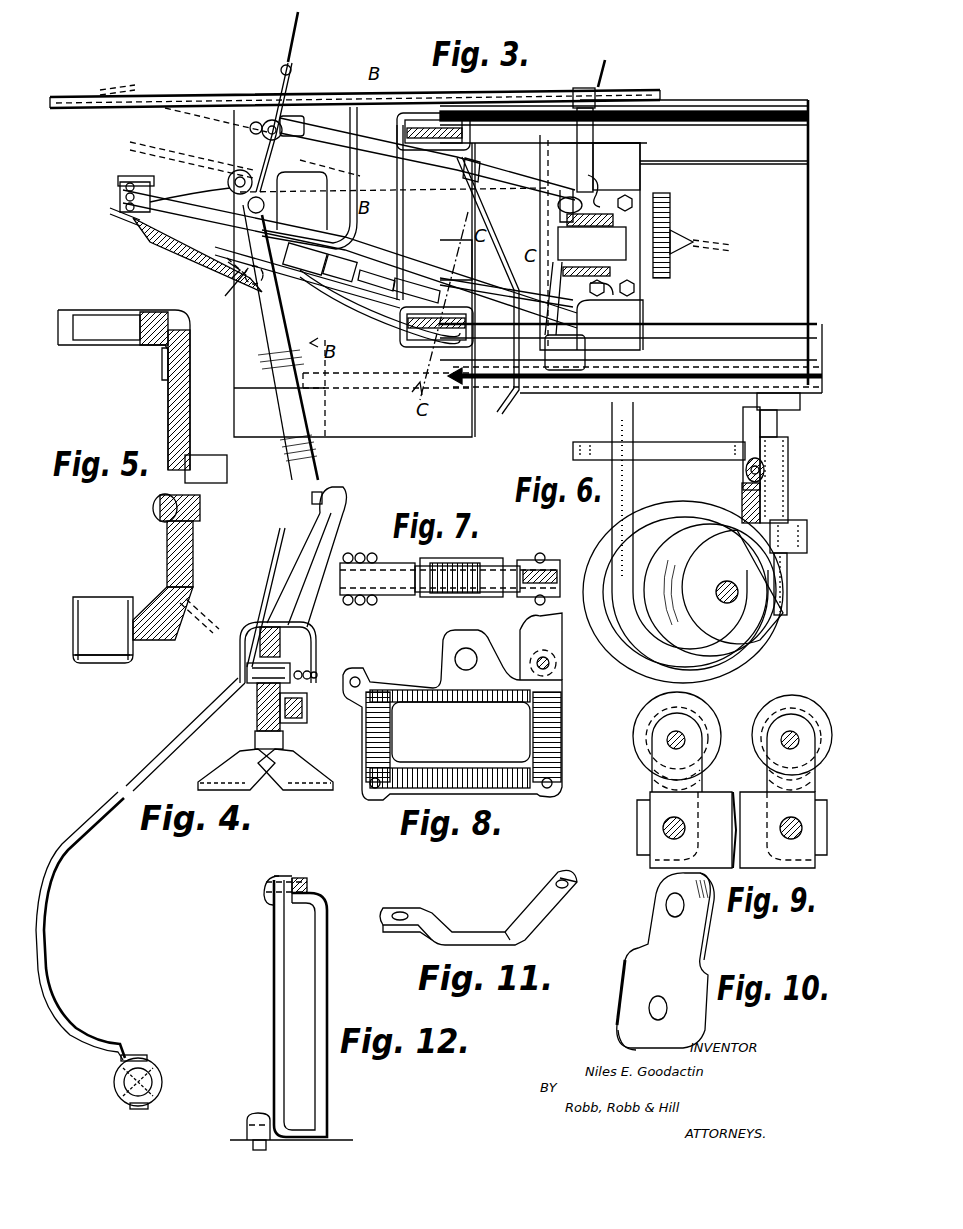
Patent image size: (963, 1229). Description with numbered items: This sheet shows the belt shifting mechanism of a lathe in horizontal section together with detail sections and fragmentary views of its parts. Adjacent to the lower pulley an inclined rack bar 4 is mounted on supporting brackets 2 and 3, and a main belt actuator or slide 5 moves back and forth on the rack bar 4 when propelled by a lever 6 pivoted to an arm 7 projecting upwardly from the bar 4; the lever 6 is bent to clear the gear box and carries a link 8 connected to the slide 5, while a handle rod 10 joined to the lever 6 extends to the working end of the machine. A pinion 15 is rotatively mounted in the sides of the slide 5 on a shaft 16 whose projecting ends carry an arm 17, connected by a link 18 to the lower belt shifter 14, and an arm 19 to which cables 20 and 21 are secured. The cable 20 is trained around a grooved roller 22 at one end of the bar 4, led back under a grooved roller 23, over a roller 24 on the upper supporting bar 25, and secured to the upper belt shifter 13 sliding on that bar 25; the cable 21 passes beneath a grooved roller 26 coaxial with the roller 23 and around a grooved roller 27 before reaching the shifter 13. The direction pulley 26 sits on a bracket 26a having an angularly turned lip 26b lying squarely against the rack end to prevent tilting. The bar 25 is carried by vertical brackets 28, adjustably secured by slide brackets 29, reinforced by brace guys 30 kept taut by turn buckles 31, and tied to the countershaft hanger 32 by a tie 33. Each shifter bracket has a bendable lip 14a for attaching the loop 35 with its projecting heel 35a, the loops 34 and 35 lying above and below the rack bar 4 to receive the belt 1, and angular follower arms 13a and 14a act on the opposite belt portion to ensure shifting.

In FIG. 3, the belt 1 is at (398, 134).
In FIG. 6, the belt 1 is at (790, 463).
In FIG. 3, the supporting bracket 2 is at (160, 262).
In FIG. 4, the supporting bracket 2 is at (265, 769).
In FIG. 3, the supporting bracket 3 is at (572, 304).
In FIG. 3, the rack bar 4 is at (545, 292).
In FIG. 5, the rack bar 4 is at (187, 555).
In FIG. 4, the rack bar 4 is at (287, 737).
In FIG. 6, the rack bar 4 is at (743, 497).
In FIG. 9, the rack bar 4 is at (732, 830).
In FIG. 3, the main belt actuator or slide 5 is at (292, 268).
In FIG. 4, the main belt actuator or slide 5 is at (308, 702).
In FIG. 7, the main belt actuator or slide 5 is at (503, 566).
In FIG. 8, the main belt actuator or slide 5 is at (555, 725).
In FIG. 3, the lever 6 is at (280, 338).
In FIG. 4, the lever 6 is at (90, 827).
In FIG. 12, the lever 6 is at (291, 1013).
In FIG. 3, the arm 7 is at (220, 200).
In FIG. 4, the arm 7 is at (328, 542).
In FIG. 11, the arm 7 is at (478, 907).
In FIG. 3, the link 8 is at (242, 282).
In FIG. 4, the link 8 is at (278, 642).
In FIG. 8, the link 8 is at (541, 646).
In FIG. 4, the handle rod 10 is at (150, 1062).
In FIG. 6, the handle rod 10 is at (800, 440).
In FIG. 3, the upper belt shifter 13 is at (405, 195).
In FIG. 3, the angular follower arm 13a is at (523, 235).
In FIG. 3, the lower belt shifter 14 is at (464, 260).
In FIG. 5, the lower belt shifter 14 is at (186, 408).
In FIG. 6, the lower belt shifter 14 is at (747, 465).
In FIG. 3, the bendable lip 14a is at (343, 174).
In FIG. 5, the bendable lip 14a is at (163, 628).
In FIG. 3, the pinion 15 is at (318, 276).
In FIG. 4, the pinion 15 is at (236, 735).
In FIG. 4, the shaft 16 is at (257, 697).
In FIG. 3, the arm 17 is at (367, 294).
In FIG. 5, the arm 17 is at (199, 632).
In FIG. 3, the link 18 is at (403, 298).
In FIG. 5, the link 18 is at (160, 522).
In FIG. 6, the link 18 is at (752, 460).
In FIG. 3, the arm 19 is at (362, 240).
In FIG. 4, the arm 19 is at (275, 668).
In FIG. 3, the cable 20 is at (122, 188).
In FIG. 4, the cable 20 is at (318, 675).
In FIG. 3, the cable 21 is at (485, 200).
In FIG. 3, the grooved roller 22 is at (610, 316).
In FIG. 6, the grooved roller 22 is at (683, 542).
In FIG. 9, the grooved roller 22 is at (797, 697).
In FIG. 3, the grooved roller 23 is at (128, 176).
In FIG. 3, the roller 24 is at (296, 118).
In FIG. 3, the upper supporting bar 25 is at (482, 190).
In FIG. 3, the grooved roller 26 is at (112, 214).
In FIG. 9, the grooved roller 26 is at (700, 718).
In FIG. 9, the bracket 26a is at (690, 787).
In FIG. 10, the bracket 26a is at (660, 923).
In FIG. 10, the angularly turned lip 26b is at (627, 987).
In FIG. 3, the grooved roller 27 is at (566, 192).
In FIG. 3, the vertical bracket 28 is at (266, 122).
In FIG. 3, the slide bracket 29 is at (258, 122).
In FIG. 3, the brace guy 30 is at (226, 262).
In FIG. 3, the turn buckle 31 is at (282, 80).
In FIG. 3, the countershaft hanger 32 is at (577, 137).
In FIG. 3, the tie 33 is at (596, 180).
In FIG. 3, the belt receiving loop 34 is at (435, 120).
In FIG. 5, the belt receiving loop 34 is at (99, 338).
In FIG. 6, the belt receiving loop 34 is at (694, 446).
In FIG. 3, the belt receiving loop 35 is at (415, 118).
In FIG. 5, the belt receiving loop 35 is at (103, 630).
In FIG. 6, the belt receiving loop 35 is at (792, 520).
In FIG. 5, the heel 35a is at (100, 665).
In FIG. 6, the heel 35a is at (798, 584).